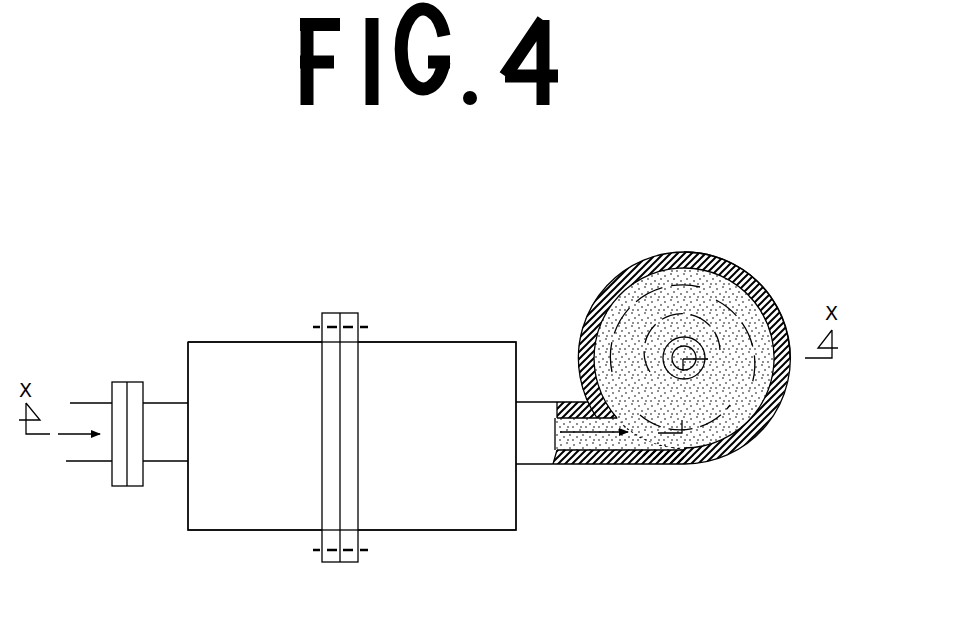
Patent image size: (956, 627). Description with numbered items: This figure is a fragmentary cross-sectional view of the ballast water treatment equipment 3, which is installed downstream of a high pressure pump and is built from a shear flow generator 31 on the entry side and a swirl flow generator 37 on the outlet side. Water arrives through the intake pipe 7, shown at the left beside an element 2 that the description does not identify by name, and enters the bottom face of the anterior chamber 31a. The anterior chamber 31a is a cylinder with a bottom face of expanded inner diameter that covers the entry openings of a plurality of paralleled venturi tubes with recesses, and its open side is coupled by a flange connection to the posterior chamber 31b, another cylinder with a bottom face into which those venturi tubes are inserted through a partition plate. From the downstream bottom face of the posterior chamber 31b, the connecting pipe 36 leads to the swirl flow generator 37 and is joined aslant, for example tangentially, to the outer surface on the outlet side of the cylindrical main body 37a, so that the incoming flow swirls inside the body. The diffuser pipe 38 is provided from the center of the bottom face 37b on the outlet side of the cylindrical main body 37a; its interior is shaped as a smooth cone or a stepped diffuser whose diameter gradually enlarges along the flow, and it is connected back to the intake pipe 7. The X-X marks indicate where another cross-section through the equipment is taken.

The inlet pipe 2 is at (70, 434).
The intake pipe 7 is at (87, 414).
The ballast water treatment equipment 3 is at (457, 240).
The shear flow generator 31 is at (437, 277).
The anterior chamber 31a is at (292, 377).
The posterior chamber 31b is at (380, 377).
The connecting pipe 36 is at (532, 413).
The swirl flow generator 37 is at (664, 336).
The cylindrical main body 37a is at (753, 273).
The bottom face 37b is at (673, 280).
The diffuser pipe 38 is at (690, 365).